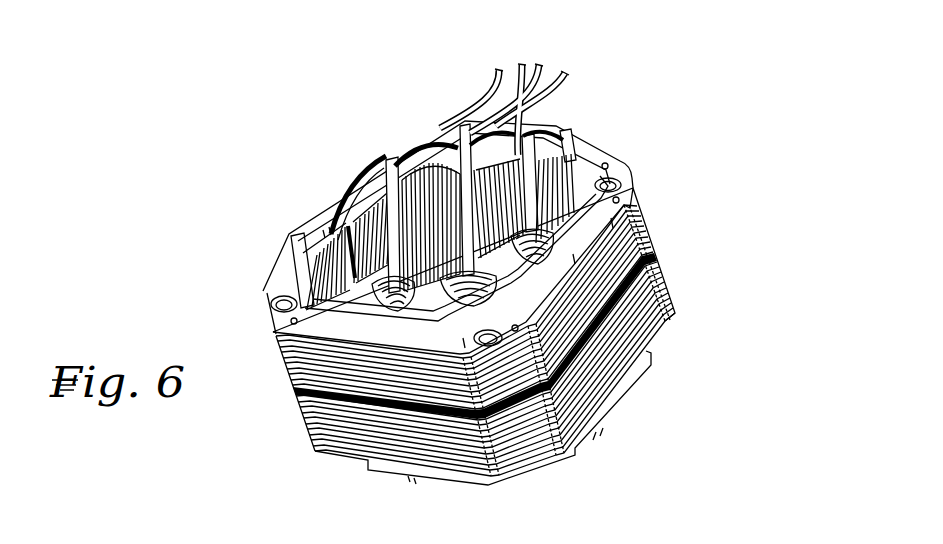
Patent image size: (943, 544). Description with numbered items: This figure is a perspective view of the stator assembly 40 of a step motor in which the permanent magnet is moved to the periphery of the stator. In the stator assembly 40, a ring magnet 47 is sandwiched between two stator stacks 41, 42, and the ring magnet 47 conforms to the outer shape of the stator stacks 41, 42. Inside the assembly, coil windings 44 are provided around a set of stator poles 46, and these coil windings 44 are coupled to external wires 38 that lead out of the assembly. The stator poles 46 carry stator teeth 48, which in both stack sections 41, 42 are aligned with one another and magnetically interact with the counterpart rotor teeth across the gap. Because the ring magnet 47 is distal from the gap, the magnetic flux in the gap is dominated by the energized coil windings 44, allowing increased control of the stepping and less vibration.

The external wires 38 is at (557, 63).
The stator assembly 40 is at (264, 157).
The stator stack 41 is at (275, 347).
The stator stack 42 is at (300, 427).
The coil windings 44 is at (312, 238).
The stator poles 46 is at (352, 190).
The ring magnet 47 is at (283, 383).
The stator teeth 48 is at (396, 147).